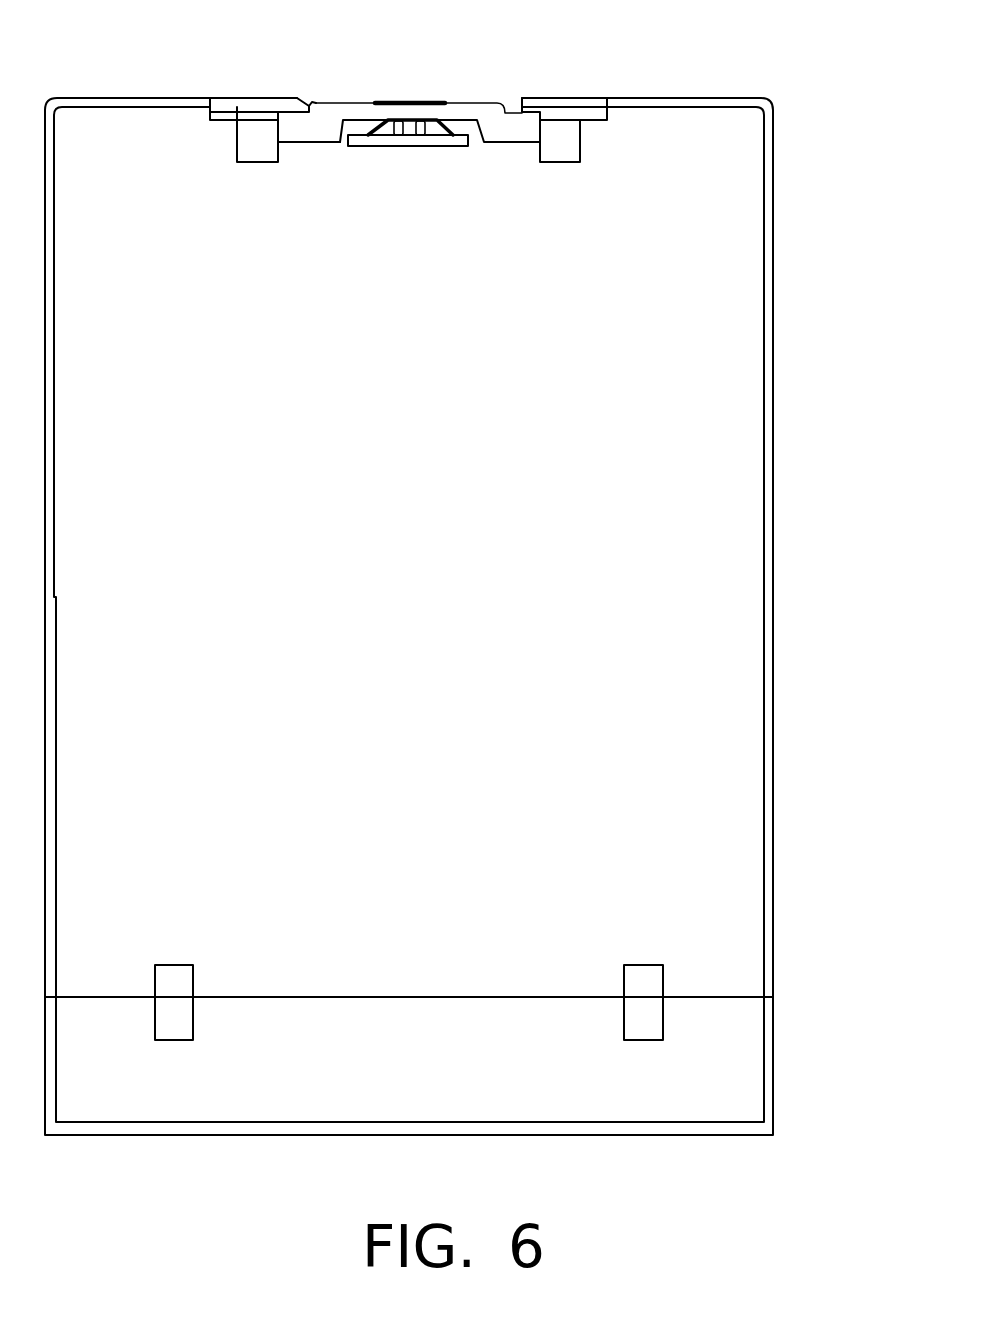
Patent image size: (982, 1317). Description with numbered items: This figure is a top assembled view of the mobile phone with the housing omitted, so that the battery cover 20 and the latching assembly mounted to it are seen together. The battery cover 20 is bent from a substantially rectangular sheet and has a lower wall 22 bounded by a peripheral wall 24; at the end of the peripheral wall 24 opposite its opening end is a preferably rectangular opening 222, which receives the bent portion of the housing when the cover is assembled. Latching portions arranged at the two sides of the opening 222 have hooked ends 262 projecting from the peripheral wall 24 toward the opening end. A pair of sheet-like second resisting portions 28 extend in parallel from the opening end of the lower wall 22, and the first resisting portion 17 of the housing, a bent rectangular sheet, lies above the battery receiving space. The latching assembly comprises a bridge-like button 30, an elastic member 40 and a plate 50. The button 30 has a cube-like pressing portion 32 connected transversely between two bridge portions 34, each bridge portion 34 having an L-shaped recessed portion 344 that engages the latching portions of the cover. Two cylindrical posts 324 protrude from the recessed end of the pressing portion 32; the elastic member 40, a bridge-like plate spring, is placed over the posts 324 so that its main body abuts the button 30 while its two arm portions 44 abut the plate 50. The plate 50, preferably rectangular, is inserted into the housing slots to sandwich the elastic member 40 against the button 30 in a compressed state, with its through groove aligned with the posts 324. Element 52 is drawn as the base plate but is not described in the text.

The first resisting portion 17 is at (732, 1067).
The battery cover 20 is at (782, 482).
The lower wall 22 is at (696, 638).
The peripheral wall 24 is at (722, 103).
The second resisting portions 28 is at (645, 978).
The button 30 is at (318, 103).
The pressing portion 32 is at (363, 108).
The bridge portions 34 is at (308, 127).
The elastic member 40 is at (445, 122).
The arm portions 44 is at (463, 135).
The plate 50 is at (453, 142).
The base plate 52 is at (410, 140).
The opening 222 is at (513, 103).
The hooked ends 262 is at (255, 108).
The cylindrical posts 324 is at (392, 128).
The recessed portion 344 is at (258, 126).